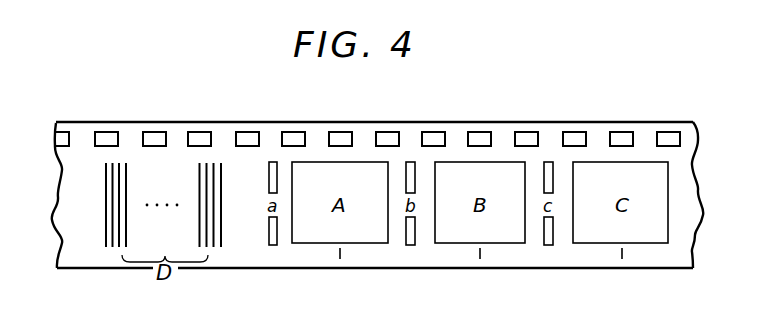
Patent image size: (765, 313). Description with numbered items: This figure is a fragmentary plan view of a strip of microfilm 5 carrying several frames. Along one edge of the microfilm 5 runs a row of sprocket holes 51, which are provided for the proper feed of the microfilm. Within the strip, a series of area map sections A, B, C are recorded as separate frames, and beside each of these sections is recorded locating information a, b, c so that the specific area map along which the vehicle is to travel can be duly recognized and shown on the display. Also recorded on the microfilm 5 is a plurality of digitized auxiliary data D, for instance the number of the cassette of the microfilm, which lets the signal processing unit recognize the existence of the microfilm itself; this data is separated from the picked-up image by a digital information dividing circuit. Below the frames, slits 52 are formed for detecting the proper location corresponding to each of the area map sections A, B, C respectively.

The microfilm 5 is at (491, 116).
The sprocket holes 51 is at (246, 131).
The slits 52 is at (341, 255).